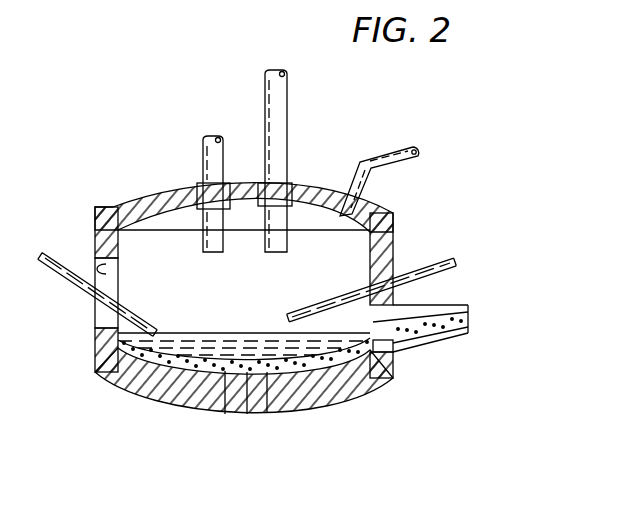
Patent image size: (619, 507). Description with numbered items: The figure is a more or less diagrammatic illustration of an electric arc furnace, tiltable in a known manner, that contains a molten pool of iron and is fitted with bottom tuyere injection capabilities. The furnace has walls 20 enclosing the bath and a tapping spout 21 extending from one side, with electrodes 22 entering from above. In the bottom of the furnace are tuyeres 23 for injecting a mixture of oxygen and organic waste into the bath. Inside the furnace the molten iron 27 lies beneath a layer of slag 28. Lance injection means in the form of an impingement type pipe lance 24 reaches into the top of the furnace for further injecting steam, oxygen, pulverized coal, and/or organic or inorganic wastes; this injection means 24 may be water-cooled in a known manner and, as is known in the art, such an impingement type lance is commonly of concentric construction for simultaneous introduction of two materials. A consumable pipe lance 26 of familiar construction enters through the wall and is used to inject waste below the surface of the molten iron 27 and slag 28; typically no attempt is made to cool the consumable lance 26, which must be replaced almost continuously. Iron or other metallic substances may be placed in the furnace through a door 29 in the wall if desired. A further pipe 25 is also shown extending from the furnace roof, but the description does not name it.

The walls 20 is at (394, 260).
The tapping spout 21 is at (462, 313).
The electrodes 22 is at (206, 155).
The bottom tuyeres 23 is at (267, 414).
The impingement type pipe lance 24 is at (456, 263).
The gas outlet pipe 25 is at (403, 162).
The consumable pipe lance 26 is at (78, 286).
The molten iron 27 is at (216, 340).
The slag 28 is at (270, 338).
The door 29 is at (104, 270).